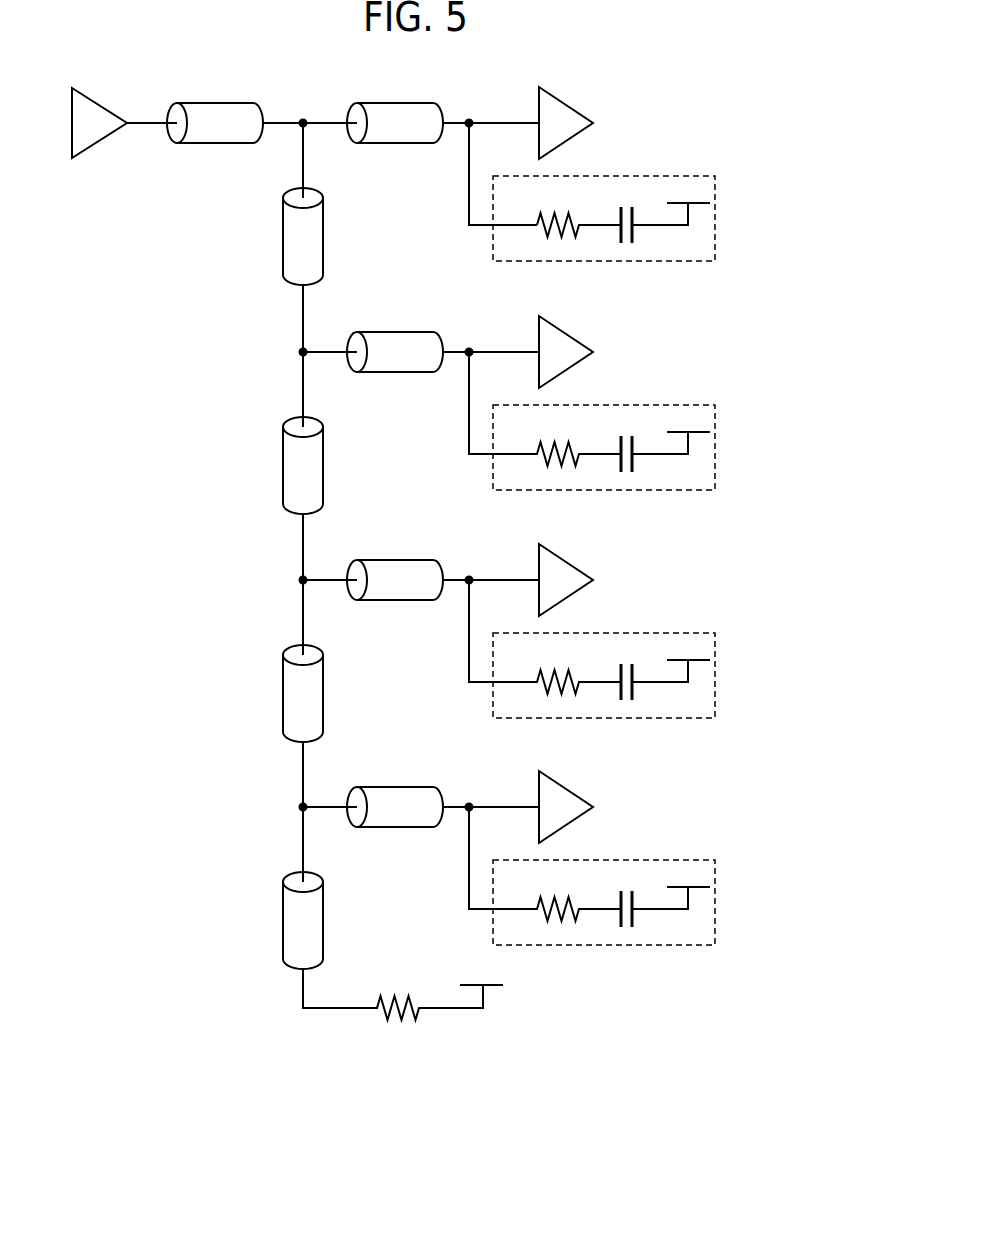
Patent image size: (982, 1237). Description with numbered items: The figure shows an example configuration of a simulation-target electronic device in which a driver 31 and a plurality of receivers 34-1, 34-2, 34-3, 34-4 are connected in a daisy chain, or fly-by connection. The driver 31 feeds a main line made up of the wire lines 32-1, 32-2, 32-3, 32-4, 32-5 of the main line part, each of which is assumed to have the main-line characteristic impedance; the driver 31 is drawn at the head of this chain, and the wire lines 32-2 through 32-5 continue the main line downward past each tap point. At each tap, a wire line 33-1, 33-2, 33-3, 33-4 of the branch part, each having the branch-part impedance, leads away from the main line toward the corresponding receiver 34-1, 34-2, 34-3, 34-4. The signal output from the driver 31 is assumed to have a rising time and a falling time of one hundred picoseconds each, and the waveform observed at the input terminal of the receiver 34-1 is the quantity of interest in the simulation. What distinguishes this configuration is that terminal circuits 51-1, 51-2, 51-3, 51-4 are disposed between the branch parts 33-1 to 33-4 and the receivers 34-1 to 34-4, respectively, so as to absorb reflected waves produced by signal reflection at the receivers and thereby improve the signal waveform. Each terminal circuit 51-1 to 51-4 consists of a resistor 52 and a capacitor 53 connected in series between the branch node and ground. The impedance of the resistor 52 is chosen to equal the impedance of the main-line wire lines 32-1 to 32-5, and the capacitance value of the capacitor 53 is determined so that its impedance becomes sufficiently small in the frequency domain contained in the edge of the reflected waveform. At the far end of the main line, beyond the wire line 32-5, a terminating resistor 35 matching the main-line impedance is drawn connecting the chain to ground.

The driver 31 is at (100, 106).
The wire line of the main line part 32-1 is at (213, 143).
The wire line of the main line part 32-2 is at (283, 247).
The wire line of the main line part 32-3 is at (283, 476).
The wire line of the main line part 32-4 is at (283, 704).
The wire line of the main line part 32-5 is at (283, 931).
The wire line of the branch part 33-1 is at (395, 145).
The wire line of the branch part 33-2 is at (395, 374).
The wire line of the branch part 33-3 is at (395, 602).
The wire line of the branch part 33-4 is at (395, 829).
The receiver 34-1 is at (565, 101).
The receiver 34-2 is at (565, 330).
The receiver 34-3 is at (565, 558).
The receiver 34-4 is at (565, 785).
The terminal circuit 51-1 is at (633, 210).
The terminal circuit 51-2 is at (716, 434).
The terminal circuit 51-3 is at (716, 662).
The terminal circuit 51-4 is at (716, 889).
The resistor 52 is at (555, 241).
The capacitor 53 is at (627, 245).
The terminating resistor (R=Z0) to ground 35 is at (399, 1021).